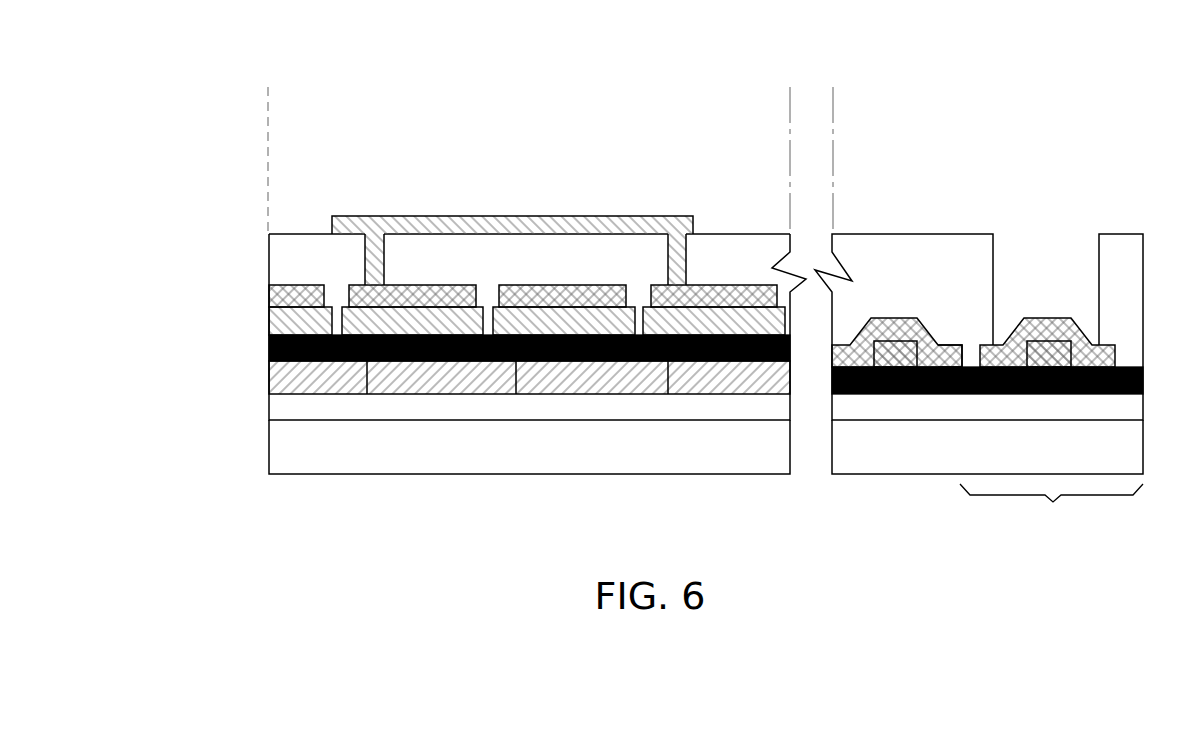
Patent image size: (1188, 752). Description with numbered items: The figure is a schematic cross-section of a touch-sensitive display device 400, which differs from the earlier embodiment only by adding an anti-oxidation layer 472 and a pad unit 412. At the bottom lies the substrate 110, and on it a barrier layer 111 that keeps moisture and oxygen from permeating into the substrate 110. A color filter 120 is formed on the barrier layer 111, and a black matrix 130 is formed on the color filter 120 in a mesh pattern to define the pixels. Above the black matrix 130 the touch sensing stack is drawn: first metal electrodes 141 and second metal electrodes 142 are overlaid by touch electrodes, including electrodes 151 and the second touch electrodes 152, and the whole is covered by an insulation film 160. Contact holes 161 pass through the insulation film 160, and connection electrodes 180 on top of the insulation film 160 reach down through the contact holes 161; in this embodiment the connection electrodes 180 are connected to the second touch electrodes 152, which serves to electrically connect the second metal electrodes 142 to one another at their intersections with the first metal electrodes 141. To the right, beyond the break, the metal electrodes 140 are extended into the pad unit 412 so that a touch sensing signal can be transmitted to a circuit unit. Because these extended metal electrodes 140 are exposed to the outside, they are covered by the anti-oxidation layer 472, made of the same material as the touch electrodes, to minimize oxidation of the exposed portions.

The touch-sensitive display device 400 is at (1130, 53).
The substrate 110 is at (280, 445).
The barrier layer 111 is at (280, 411).
The color filter 120 is at (433, 377).
The black matrix 130 is at (280, 347).
The metal electrodes 140 is at (886, 350).
The first metal electrodes 141 is at (603, 323).
The second metal electrodes 142 is at (430, 320).
The second gate electrode 151 is at (545, 295).
The second touch electrodes 152 is at (740, 295).
The insulation film 160 is at (280, 258).
The contact holes 161 is at (687, 253).
The connection electrodes 180 is at (505, 227).
The pad unit 412 is at (1051, 507).
The anti-oxidation layer 472 is at (949, 356).